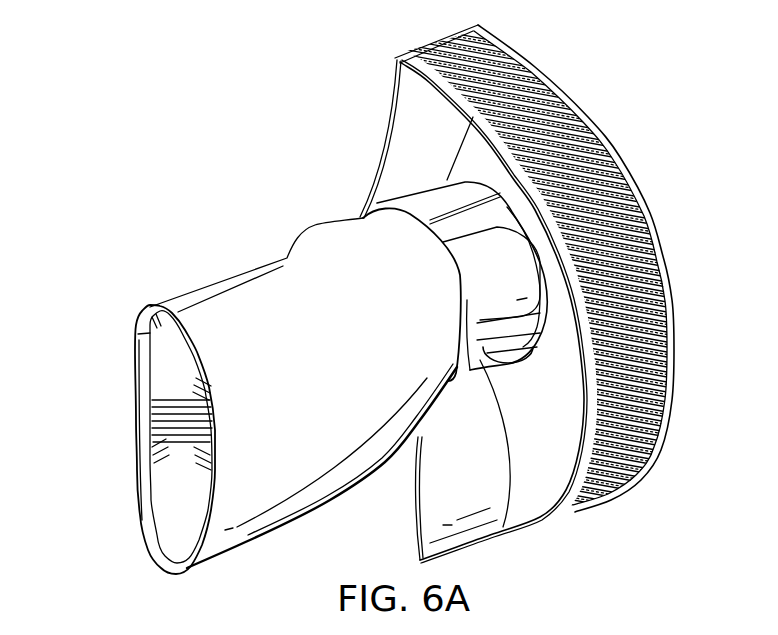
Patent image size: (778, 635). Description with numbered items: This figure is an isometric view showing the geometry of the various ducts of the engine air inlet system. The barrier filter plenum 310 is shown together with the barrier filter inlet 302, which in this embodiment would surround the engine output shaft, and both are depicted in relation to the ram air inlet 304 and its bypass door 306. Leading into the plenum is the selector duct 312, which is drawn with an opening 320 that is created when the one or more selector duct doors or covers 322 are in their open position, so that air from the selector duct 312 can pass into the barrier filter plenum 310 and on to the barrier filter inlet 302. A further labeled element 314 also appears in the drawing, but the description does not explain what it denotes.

The barrier filter inlet 302 is at (653, 300).
The ram air inlet 304 is at (110, 406).
The bypass door 306 is at (163, 478).
The barrier filter plenum 310 is at (416, 106).
The selector duct 312 is at (535, 375).
The duct 314 is at (252, 296).
The opening 320 is at (468, 263).
The selector duct doors or covers 322 is at (430, 210).